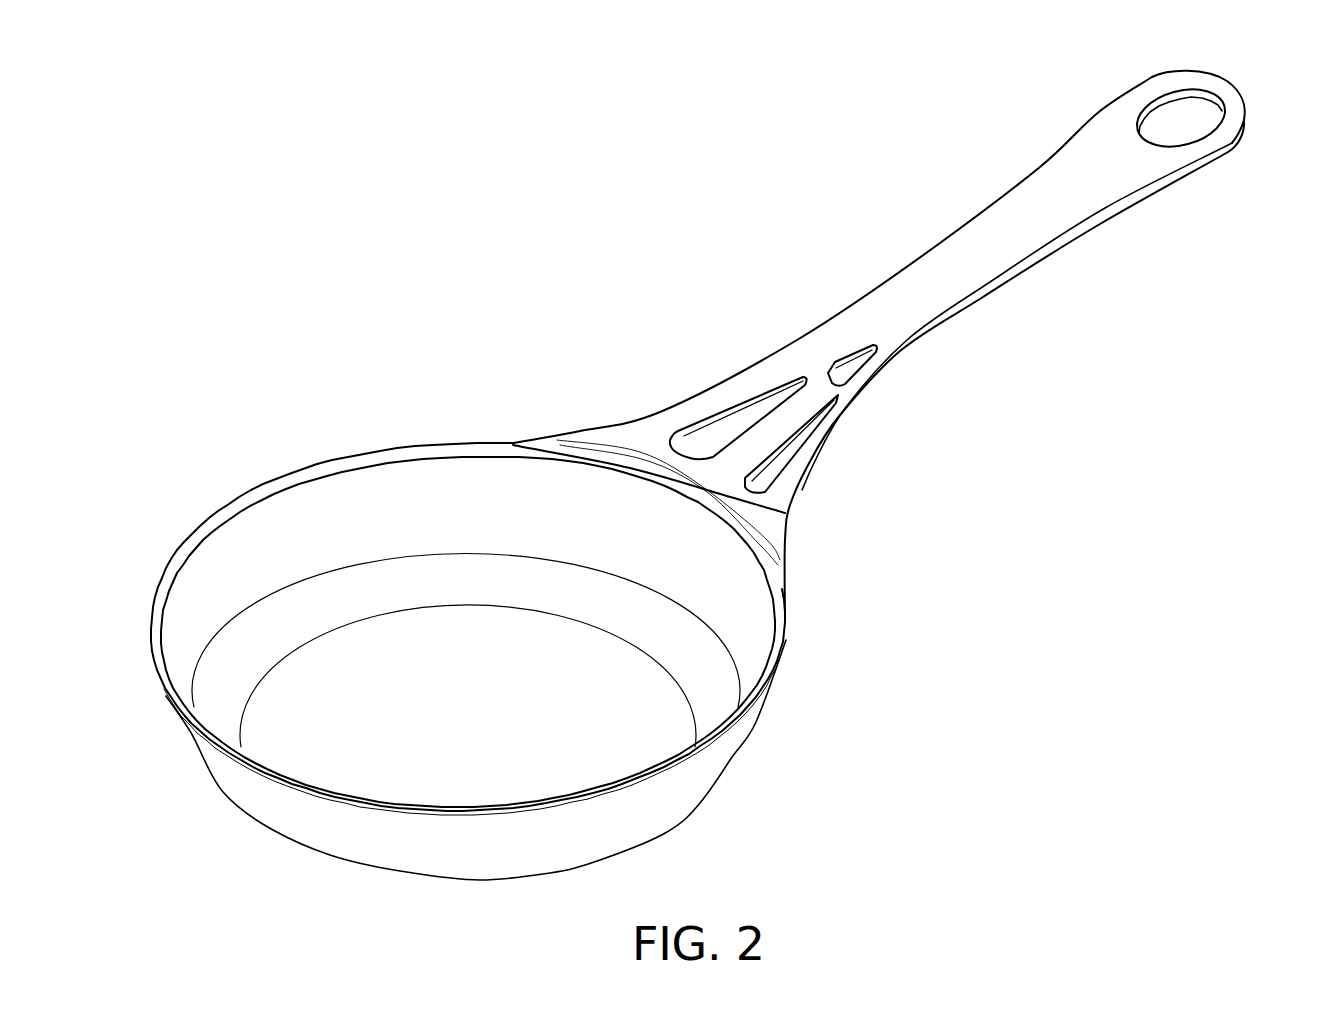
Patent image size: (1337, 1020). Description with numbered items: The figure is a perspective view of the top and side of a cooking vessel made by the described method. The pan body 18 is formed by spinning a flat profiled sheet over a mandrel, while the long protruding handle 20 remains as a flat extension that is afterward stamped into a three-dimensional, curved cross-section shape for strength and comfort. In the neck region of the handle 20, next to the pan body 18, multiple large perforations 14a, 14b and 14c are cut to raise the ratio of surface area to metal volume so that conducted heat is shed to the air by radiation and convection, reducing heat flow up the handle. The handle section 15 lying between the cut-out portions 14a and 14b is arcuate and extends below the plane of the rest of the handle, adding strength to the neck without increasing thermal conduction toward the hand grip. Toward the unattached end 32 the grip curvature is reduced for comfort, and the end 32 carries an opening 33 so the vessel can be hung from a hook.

The pan body 18 is at (478, 717).
The handle 20 is at (1010, 215).
The unattached end 32 is at (1223, 138).
The opening 33 is at (1183, 113).
The perforation 14a is at (735, 425).
The perforation 14b is at (770, 473).
The perforation 14c is at (850, 367).
The handle section 15 is at (787, 422).